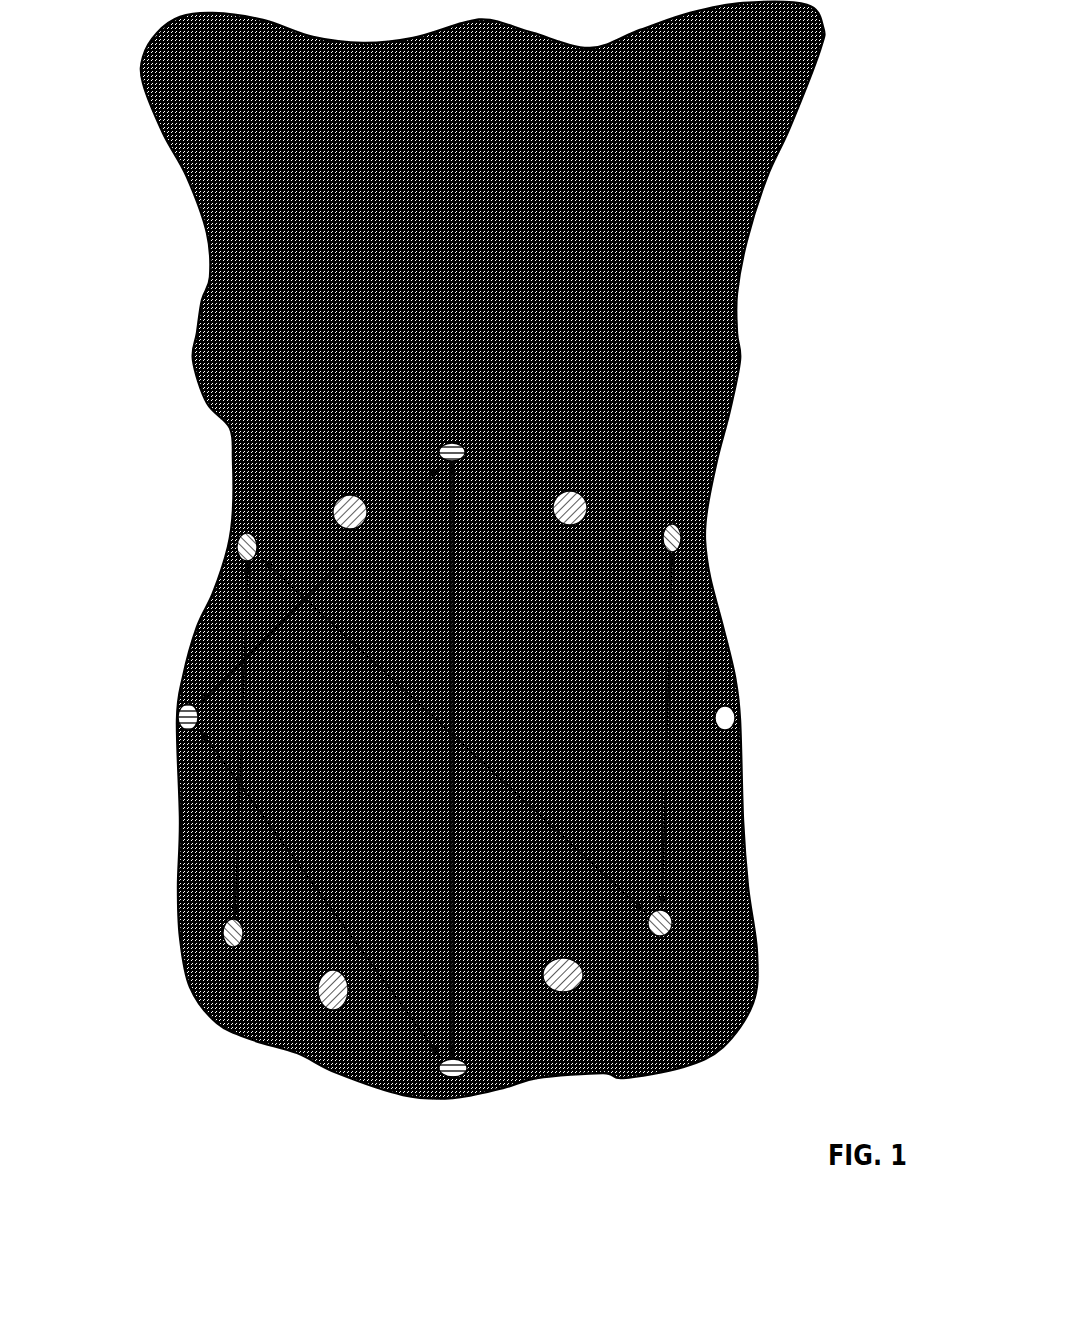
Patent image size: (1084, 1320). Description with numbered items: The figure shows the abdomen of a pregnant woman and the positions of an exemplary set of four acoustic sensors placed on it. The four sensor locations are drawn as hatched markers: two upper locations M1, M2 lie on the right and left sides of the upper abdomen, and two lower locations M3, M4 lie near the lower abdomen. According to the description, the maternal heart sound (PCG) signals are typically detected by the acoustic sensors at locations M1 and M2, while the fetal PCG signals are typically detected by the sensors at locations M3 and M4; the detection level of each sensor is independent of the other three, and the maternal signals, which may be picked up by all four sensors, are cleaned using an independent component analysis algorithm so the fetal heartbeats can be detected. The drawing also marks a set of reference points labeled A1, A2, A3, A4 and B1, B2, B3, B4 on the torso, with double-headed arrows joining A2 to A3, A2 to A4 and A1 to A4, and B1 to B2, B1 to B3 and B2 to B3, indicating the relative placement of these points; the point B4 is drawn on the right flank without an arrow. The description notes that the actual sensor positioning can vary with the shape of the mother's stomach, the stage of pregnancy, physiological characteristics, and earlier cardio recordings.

The back reference point B1 is at (465, 452).
The acoustic sensor location M1 is at (588, 508).
The reference point A1 is at (682, 538).
The back reference point B4 is at (737, 717).
The reference point A4 is at (673, 922).
The acoustic sensor location M2 is at (333, 512).
The reference point A2 is at (238, 542).
The back reference point B2 is at (178, 718).
The reference point A3 is at (223, 933).
The acoustic sensor location M3 is at (333, 1010).
The back reference point B3 is at (452, 1078).
The acoustic sensor location M4 is at (560, 990).